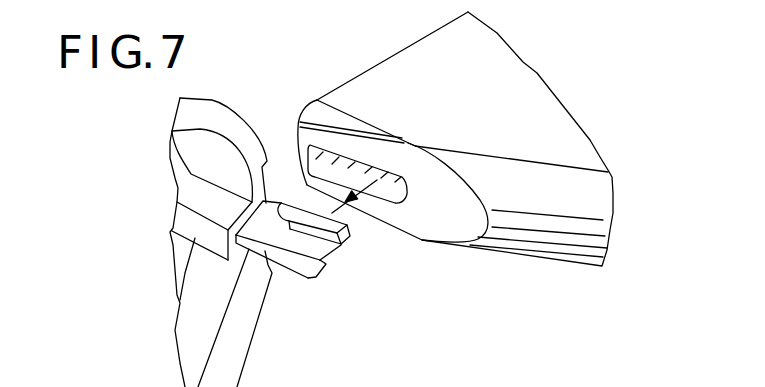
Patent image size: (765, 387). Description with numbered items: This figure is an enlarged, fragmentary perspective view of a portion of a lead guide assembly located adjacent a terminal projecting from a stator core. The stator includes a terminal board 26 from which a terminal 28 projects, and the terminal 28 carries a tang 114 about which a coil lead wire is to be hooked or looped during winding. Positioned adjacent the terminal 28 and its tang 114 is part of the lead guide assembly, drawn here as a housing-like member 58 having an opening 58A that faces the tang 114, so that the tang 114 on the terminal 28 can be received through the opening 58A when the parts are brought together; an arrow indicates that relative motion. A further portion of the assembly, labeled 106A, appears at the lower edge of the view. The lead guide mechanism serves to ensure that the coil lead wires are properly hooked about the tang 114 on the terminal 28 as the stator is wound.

The terminal board 26 is at (210, 117).
The terminal 28 is at (279, 264).
The tang 114 is at (351, 239).
The housing 58 is at (523, 82).
The slot 58A is at (331, 160).
The connector portion 106A is at (556, 386).